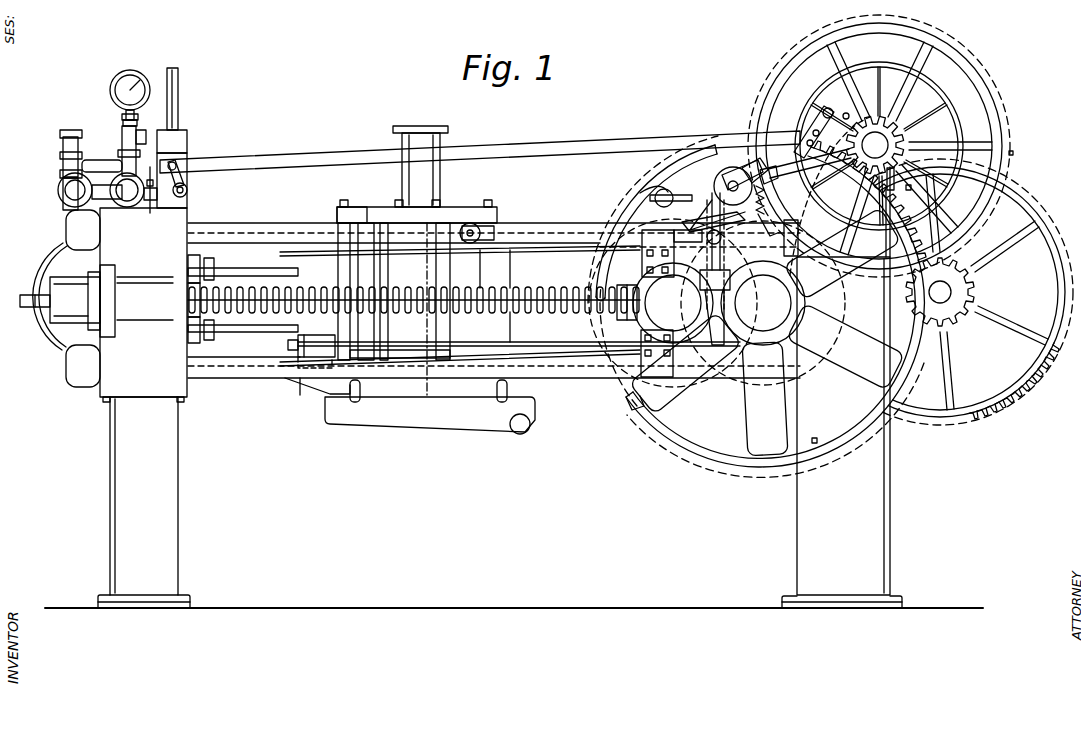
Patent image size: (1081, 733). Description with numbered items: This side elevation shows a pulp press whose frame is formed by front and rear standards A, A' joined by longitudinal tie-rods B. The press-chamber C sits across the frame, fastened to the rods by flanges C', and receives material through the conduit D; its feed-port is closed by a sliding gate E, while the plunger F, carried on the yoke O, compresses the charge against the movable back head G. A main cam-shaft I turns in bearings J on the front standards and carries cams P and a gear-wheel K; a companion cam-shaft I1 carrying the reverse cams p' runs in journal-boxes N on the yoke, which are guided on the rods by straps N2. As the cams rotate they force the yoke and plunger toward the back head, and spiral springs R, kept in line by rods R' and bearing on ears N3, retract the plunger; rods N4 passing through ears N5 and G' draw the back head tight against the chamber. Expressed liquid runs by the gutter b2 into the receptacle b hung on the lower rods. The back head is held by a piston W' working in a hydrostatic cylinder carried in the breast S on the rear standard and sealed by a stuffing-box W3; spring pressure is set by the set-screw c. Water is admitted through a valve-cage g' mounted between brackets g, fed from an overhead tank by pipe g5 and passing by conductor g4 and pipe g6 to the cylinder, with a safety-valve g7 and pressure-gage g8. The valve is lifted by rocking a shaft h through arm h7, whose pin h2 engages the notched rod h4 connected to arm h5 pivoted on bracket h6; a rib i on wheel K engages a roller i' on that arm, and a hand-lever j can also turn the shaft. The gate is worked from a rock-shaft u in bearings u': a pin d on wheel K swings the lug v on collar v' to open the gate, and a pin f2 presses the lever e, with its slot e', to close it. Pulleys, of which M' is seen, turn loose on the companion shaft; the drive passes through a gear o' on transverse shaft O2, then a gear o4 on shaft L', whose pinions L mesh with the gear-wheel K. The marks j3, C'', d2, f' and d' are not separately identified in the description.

The front standard A is at (842, 387).
The rear standard A' is at (144, 502).
The longitudinal tie-rods B is at (266, 233).
The breast S is at (126, 305).
The cylinder j3 is at (67, 301).
The set-screw c is at (20, 298).
The pressure-gage g8 is at (130, 70).
The supply pipe g5 is at (178, 100).
The valve-cage g' is at (188, 136).
The safety-valve g7 is at (60, 134).
The cylinder pipe g6 is at (58, 192).
The horizontal conductor g4 is at (122, 146).
The brackets g is at (144, 201).
The hand-lever j is at (172, 250).
The rock-shaft of valve h is at (188, 190).
The upwardly-extending arm h7 is at (186, 176).
The laterally-projecting pin h2 is at (180, 164).
The notched rod h4 is at (345, 152).
The pivoted arm h5 is at (820, 108).
The bracket h6 is at (839, 101).
The piston W' is at (414, 281).
The stuffing-box W3 is at (243, 336).
The journal-boxes N is at (580, 252).
The guide plates or straps N2 is at (620, 227).
The ear N3 is at (620, 340).
The head-drawing rods N4 is at (472, 342).
The ears N5 is at (670, 378).
The press-chamber C is at (417, 297).
The flanges C' is at (400, 339).
The frame top plate C'' is at (360, 203).
The back head G is at (327, 291).
The ear G' is at (311, 339).
The conduit D is at (422, 126).
The plunger F is at (466, 243).
The gate E is at (478, 252).
The yoke O is at (493, 269).
The spiral spring R is at (522, 269).
The spring rod R' is at (512, 327).
The receptacle b is at (430, 407).
The gutter b2 is at (318, 386).
The companion cam-shaft I1 is at (673, 303).
The main cam-shaft I is at (763, 303).
The cams P is at (858, 290).
The gear-wheel K is at (630, 175).
The rib i is at (830, 340).
The roller i' is at (830, 196).
The pinion shaft L' is at (903, 188).
The pulley M' is at (879, 146).
The pinions L is at (874, 144).
The gear o' is at (940, 292).
The gear o4 is at (1008, 153).
The transverse shaft O2 is at (952, 292).
The pin d2 is at (668, 190).
The pin f2 is at (650, 190).
The rock-shaft u is at (733, 174).
The bearings u' is at (717, 212).
The collar v' is at (734, 179).
The companion cams p' is at (713, 224).
The segmental slot e' is at (763, 162).
The lever e is at (776, 171).
The spring f' is at (776, 195).
The lug v is at (778, 216).
The pin d is at (726, 252).
The pivot d' is at (731, 253).
The bearings J is at (714, 323).